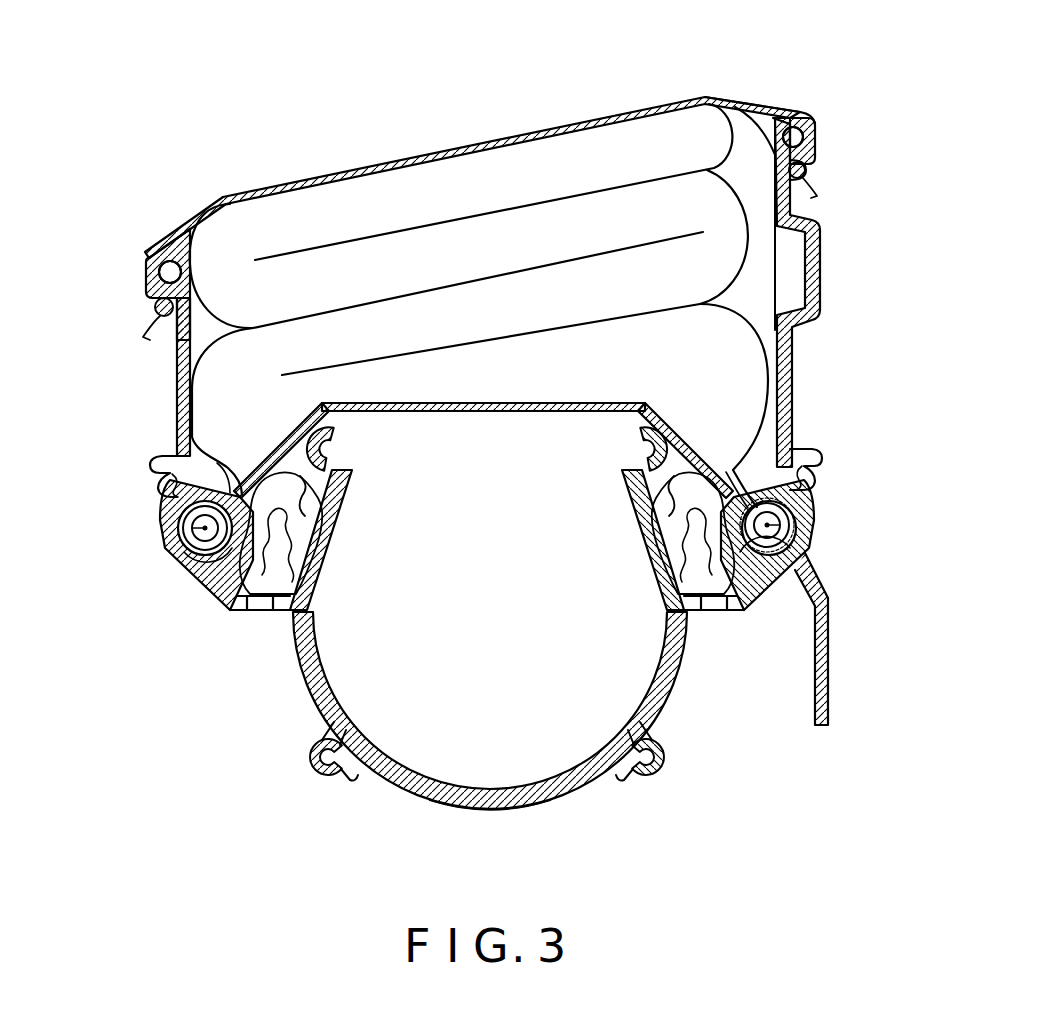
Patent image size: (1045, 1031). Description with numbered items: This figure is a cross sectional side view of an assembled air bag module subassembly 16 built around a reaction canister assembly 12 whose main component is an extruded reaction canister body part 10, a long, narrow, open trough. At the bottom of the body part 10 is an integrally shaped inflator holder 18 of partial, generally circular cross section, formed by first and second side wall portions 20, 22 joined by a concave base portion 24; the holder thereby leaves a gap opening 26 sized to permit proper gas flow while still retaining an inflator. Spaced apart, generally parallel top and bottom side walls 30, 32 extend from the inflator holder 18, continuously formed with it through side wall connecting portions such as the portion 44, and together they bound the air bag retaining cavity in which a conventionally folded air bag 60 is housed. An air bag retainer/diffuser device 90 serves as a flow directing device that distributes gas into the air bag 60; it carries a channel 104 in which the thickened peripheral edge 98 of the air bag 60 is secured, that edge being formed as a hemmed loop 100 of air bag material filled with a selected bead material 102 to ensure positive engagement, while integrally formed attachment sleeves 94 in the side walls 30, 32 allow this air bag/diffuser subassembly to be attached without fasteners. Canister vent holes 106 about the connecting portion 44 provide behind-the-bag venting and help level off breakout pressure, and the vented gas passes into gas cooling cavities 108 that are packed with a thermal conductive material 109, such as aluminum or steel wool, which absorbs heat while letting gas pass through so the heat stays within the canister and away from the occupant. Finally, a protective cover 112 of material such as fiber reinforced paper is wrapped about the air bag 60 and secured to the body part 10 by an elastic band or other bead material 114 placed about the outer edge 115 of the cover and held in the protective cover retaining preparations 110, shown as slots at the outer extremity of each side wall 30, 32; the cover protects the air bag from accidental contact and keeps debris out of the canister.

The reaction canister body part 10 is at (795, 380).
The reaction canister assembly 12 is at (130, 507).
The air bag module subassembly 16 is at (243, 118).
The inflator holder 18 is at (391, 776).
The first side wall portion 20 is at (356, 522).
The second side wall portion 22 is at (645, 488).
The concave base portion 24 is at (493, 806).
The gap opening 26 is at (473, 466).
The top side wall 30 is at (162, 252).
The bottom side wall 32 is at (798, 116).
The side wall connecting portion 44 is at (737, 611).
The air bag 60 is at (460, 180).
The air bag retainer/diffuser device 90 is at (543, 403).
The attachment sleeves 94 is at (237, 495).
The thickened peripheral edge 98 is at (204, 574).
The hemmed loop 100 is at (178, 500).
The bead material 102 is at (186, 548).
The channel 104 is at (184, 562).
The canister vent holes 106 is at (283, 601).
The gas cooling cavities 108 is at (318, 490).
The thermal conductive material 109 is at (308, 526).
The protective cover retaining preparations 110 is at (808, 142).
The protective cover 112 is at (752, 100).
The bead material 114 is at (808, 172).
The outer edge 115 is at (818, 197).